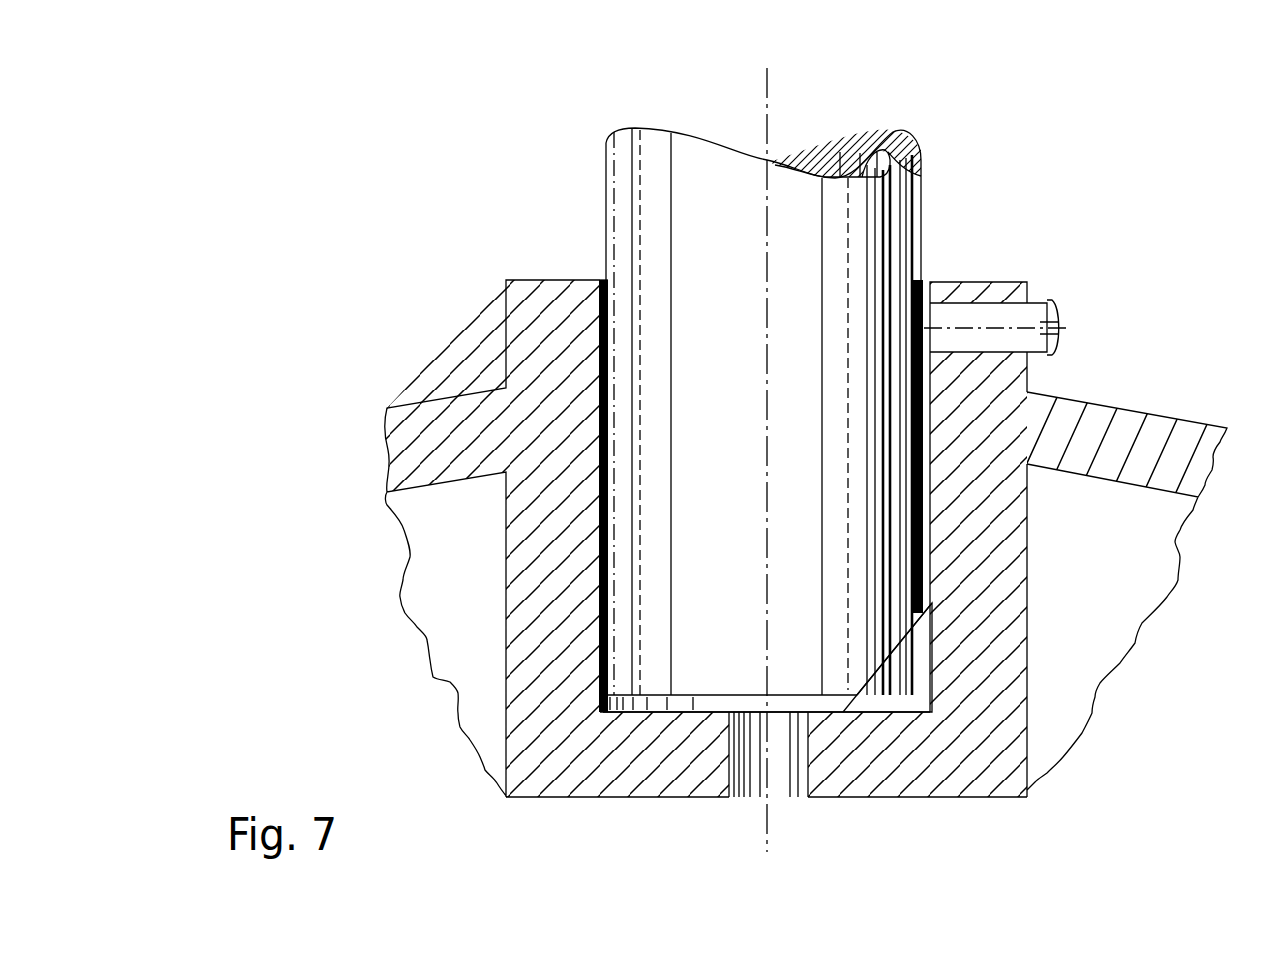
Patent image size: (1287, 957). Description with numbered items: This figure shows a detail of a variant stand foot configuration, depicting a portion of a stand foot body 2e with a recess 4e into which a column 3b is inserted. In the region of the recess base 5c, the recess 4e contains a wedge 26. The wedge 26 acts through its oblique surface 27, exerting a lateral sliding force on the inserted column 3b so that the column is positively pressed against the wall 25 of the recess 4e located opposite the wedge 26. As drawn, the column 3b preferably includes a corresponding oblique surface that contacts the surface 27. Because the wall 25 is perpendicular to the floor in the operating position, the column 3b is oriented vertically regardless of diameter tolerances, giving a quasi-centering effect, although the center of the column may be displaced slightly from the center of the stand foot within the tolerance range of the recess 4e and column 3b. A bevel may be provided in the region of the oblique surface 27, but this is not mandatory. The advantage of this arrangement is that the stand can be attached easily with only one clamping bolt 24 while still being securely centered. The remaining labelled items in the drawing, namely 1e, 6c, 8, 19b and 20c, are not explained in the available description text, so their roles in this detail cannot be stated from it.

The holding device 1e is at (426, 306).
The stand foot body 2e is at (1203, 444).
The column 3b is at (747, 339).
The recess 4e is at (947, 545).
The recess base 5c is at (637, 755).
The opening 6c is at (753, 780).
The axis 8 is at (777, 100).
The side wall 19b is at (983, 368).
The bore 20c is at (981, 313).
The clamping bolt 24 is at (1050, 306).
The wall 25 is at (596, 320).
The wedge 26 is at (876, 688).
The oblique surface 27 is at (868, 690).